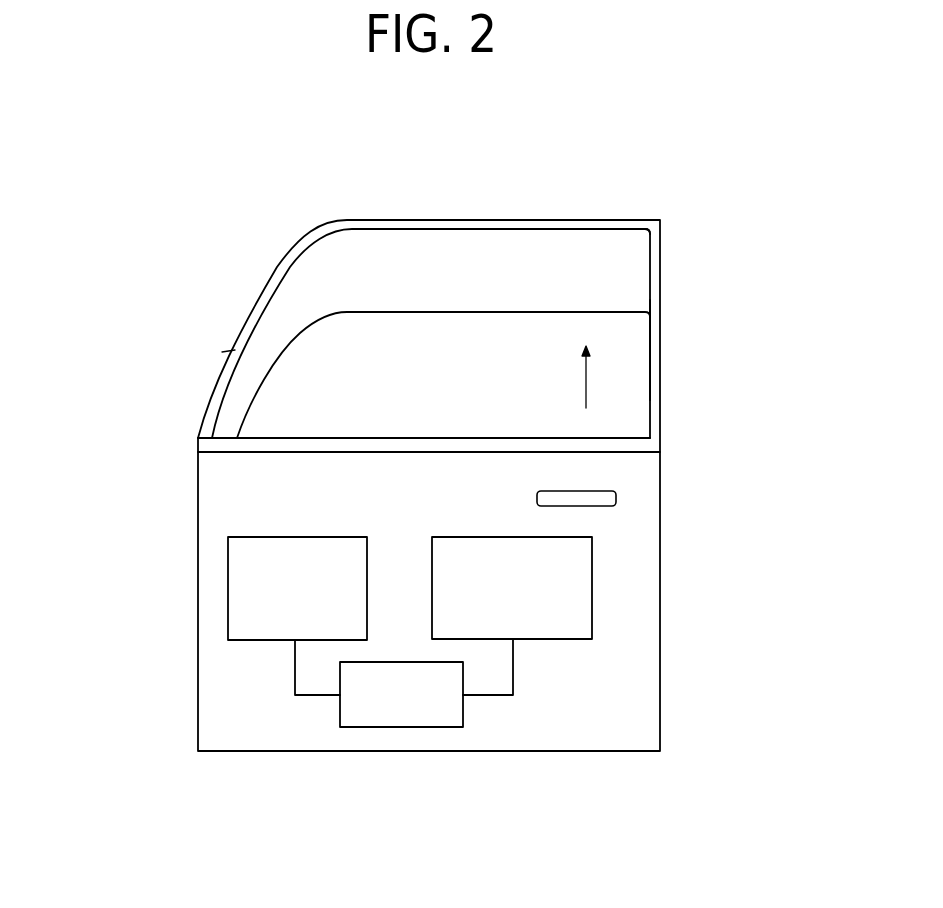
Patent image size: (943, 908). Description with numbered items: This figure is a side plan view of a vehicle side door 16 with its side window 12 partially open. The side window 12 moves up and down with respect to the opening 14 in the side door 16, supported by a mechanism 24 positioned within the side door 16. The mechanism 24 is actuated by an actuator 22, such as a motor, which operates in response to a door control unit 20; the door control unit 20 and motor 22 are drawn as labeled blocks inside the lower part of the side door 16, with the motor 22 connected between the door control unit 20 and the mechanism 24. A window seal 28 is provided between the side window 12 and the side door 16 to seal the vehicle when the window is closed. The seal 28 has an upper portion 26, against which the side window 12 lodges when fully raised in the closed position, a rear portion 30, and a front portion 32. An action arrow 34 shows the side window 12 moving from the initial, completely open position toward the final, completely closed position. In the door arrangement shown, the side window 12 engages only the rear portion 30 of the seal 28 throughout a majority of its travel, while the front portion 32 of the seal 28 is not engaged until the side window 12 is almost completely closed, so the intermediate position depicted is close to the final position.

The side window 12 is at (494, 390).
The opening 14 is at (340, 284).
The side door 16 is at (218, 370).
The door control unit 20 is at (228, 593).
The actuator 22 is at (383, 727).
The mechanism 24 is at (595, 605).
The upper portion 26 is at (413, 228).
The window seal 28 is at (655, 225).
The rear portion 30 is at (652, 345).
The front portion 32 is at (237, 352).
The action arrow 34 is at (586, 380).